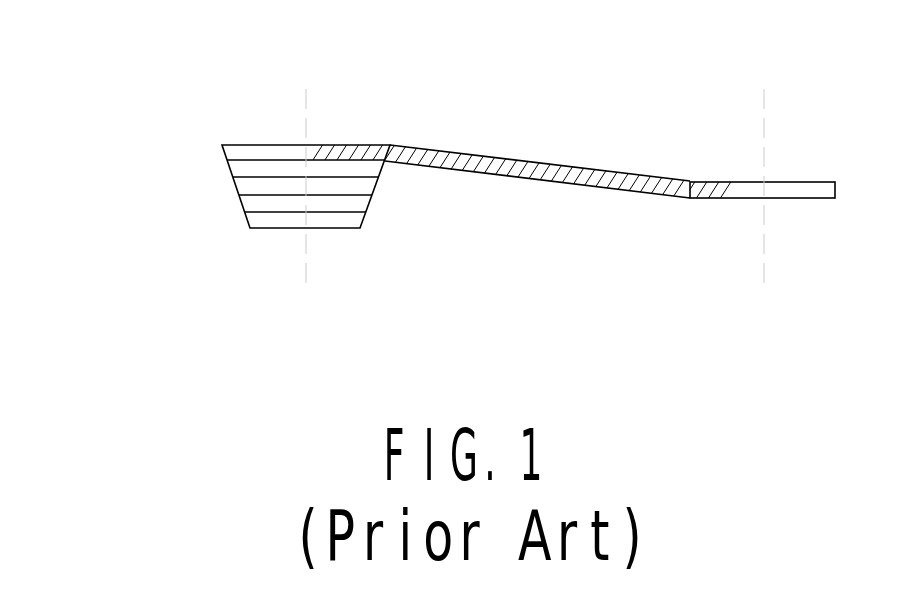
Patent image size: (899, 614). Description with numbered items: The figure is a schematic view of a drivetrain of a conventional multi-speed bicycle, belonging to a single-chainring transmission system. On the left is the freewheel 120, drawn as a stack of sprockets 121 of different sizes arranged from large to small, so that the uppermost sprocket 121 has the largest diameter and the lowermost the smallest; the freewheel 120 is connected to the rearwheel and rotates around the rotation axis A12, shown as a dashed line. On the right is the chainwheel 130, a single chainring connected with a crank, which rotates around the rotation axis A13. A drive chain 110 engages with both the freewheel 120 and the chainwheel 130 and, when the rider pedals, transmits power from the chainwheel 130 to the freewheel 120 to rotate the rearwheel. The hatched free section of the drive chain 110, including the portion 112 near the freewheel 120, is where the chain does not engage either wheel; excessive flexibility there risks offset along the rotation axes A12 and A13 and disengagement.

The drive chain 110 is at (495, 157).
The hatched end portion of arm 112 is at (348, 125).
The freewheel 120 is at (387, 212).
The sprockets 121 is at (242, 153).
The chainwheel 130 is at (808, 158).
The rotation axis A12 is at (306, 268).
The rotation axis A13 is at (764, 268).